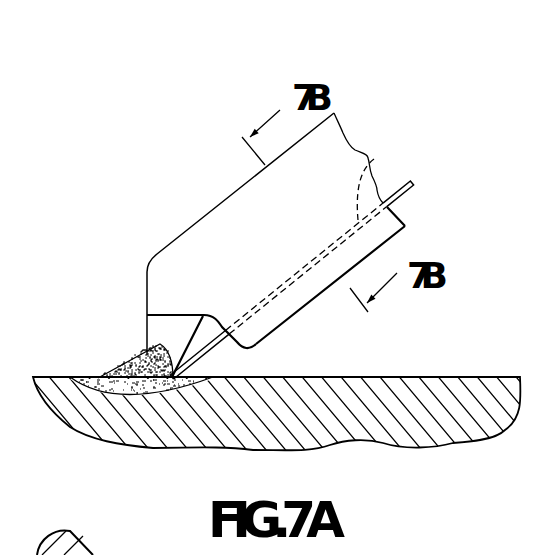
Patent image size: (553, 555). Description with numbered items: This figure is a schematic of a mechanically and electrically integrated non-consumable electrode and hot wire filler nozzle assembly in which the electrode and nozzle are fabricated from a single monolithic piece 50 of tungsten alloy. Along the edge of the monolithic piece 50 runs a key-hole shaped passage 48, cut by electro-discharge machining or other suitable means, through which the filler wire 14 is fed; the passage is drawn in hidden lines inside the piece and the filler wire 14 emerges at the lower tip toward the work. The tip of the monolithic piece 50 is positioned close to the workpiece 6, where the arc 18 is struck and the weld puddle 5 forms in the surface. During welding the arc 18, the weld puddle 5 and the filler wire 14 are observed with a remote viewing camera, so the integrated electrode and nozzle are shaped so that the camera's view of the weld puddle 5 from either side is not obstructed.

The weld puddle 5 is at (130, 393).
The ground 6 is at (410, 376).
The filler wire 14 is at (218, 349).
The arc 18 is at (127, 362).
The key-hole shaped passage 48 is at (374, 159).
The monolithic piece 50 is at (182, 226).